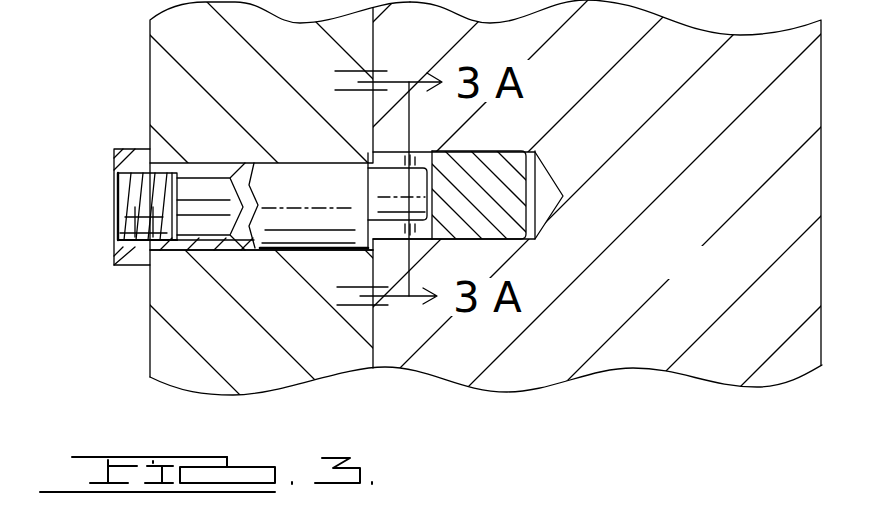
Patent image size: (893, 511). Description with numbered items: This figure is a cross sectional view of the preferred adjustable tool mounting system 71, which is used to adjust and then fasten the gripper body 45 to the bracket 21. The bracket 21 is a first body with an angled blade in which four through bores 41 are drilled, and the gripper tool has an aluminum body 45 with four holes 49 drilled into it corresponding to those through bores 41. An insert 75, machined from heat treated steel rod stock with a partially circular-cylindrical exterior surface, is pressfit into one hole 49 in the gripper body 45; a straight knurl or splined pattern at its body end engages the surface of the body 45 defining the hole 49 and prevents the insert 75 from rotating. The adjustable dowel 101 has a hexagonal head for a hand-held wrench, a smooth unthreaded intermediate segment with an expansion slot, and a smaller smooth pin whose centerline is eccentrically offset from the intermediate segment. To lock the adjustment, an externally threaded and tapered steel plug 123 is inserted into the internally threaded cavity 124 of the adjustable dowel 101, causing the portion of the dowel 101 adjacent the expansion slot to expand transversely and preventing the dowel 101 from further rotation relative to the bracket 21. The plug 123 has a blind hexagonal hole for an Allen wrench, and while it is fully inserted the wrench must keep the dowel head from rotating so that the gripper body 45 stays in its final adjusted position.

The bracket 21 is at (163, 351).
The through bore 41 is at (212, 165).
The gripper body 45 is at (699, 276).
The hole 49 is at (386, 156).
The adjustable tool mounting system 71 is at (408, 401).
The insert 75 is at (509, 173).
The adjustable dowel 101 is at (277, 247).
The plug 123 is at (133, 190).
The internally threaded cavity 124 is at (133, 235).